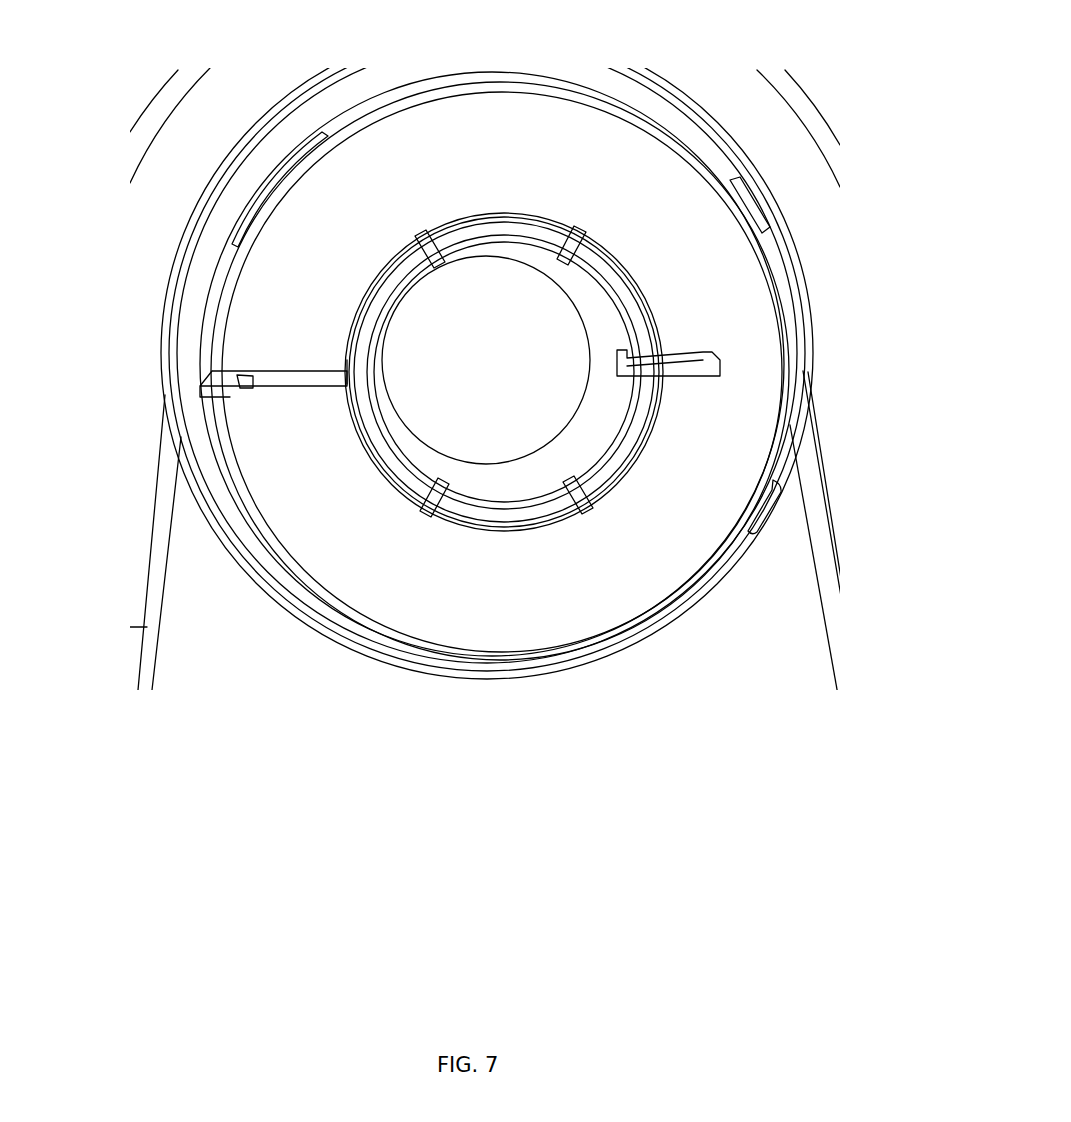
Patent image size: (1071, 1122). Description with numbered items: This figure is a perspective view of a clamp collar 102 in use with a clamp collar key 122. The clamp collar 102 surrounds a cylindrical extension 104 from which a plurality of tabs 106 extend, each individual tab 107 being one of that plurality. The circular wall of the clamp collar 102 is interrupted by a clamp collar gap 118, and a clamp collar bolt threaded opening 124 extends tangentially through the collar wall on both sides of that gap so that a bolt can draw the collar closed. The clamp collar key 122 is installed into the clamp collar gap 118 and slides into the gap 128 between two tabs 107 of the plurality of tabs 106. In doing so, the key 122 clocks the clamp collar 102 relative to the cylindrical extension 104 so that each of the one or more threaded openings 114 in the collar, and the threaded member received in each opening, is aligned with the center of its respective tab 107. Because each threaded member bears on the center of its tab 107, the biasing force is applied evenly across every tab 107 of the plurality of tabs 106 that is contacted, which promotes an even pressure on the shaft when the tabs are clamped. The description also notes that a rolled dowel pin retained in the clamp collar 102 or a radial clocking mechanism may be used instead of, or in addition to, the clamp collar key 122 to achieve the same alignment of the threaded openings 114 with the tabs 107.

The clamp collar 102 is at (508, 150).
The cylindrical extension 104 is at (574, 430).
The plurality of tabs 106 is at (632, 238).
The tab 107 is at (462, 213).
The threaded opening 114 is at (768, 198).
The clamp collar gap 118 is at (238, 379).
The clamp collar key 122 is at (235, 397).
The clamp collar bolt threaded opening 124 is at (273, 177).
The gap between two tabs 128 is at (392, 372).